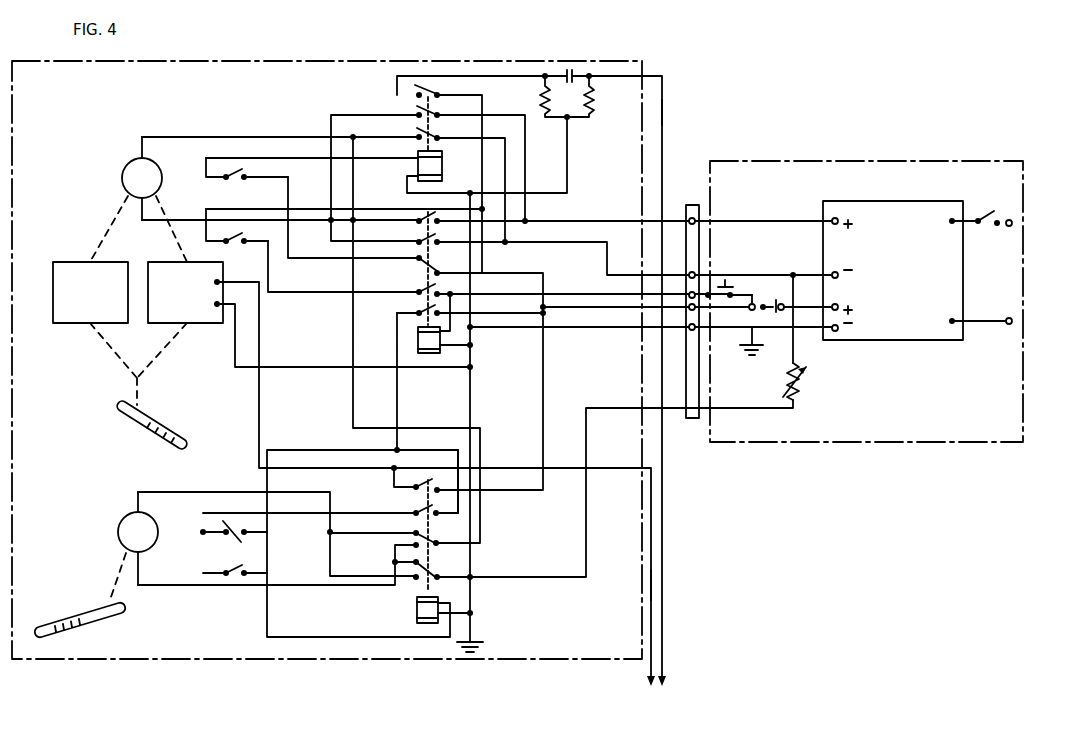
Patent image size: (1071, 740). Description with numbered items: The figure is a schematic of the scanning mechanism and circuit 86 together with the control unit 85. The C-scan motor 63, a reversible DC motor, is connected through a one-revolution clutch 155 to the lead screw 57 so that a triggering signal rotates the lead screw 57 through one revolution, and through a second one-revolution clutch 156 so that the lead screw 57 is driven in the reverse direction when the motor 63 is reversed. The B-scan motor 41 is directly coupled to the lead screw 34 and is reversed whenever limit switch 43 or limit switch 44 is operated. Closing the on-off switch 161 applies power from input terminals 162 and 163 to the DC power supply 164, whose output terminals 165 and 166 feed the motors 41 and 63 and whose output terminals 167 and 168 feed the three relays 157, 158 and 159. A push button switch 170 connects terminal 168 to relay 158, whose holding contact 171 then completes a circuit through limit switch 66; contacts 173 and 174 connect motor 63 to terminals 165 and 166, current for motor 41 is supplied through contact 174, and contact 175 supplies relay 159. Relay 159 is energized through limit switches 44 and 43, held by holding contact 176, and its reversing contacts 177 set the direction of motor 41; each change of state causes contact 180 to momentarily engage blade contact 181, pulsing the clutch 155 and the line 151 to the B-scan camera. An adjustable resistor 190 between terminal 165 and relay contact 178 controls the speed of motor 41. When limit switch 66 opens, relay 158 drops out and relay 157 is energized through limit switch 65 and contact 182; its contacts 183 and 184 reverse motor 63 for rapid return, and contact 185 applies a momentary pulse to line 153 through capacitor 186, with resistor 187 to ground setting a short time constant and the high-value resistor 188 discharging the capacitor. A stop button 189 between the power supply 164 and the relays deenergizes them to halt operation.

The lead screw 34 is at (90, 620).
The B-scan motor 41 is at (130, 523).
The limit switch 43 is at (230, 576).
The limit switch 44 is at (235, 540).
The lead screw 57 is at (143, 421).
The C-scan motor 63 is at (126, 175).
The limit switch 65 is at (243, 179).
The limit switch 66 is at (245, 239).
The control unit 85 is at (1024, 163).
The scanning mechanism and circuit 86 is at (645, 62).
The line 151 is at (651, 585).
The line 153 is at (663, 112).
The one-revolution clutch 155 is at (213, 272).
The one-revolution clutch 156 is at (82, 267).
The relay 157 is at (418, 170).
The relay 158 is at (418, 340).
The relay 159 is at (417, 613).
The on-off switch 161 is at (981, 218).
The power input terminal 162 is at (1008, 228).
The power input terminal 163 is at (1005, 318).
The DC power supply 164 is at (886, 207).
The output terminal 165 is at (832, 273).
The output terminal 166 is at (832, 220).
The output terminal 167 is at (836, 331).
The output terminal 168 is at (832, 305).
The push button switch 170 is at (728, 282).
The holding contact 171 is at (419, 288).
The contact 173 is at (419, 238).
The contact 174 is at (419, 214).
The contact 175 is at (419, 310).
The holding contact 176 is at (412, 511).
The reversing contacts 177 is at (431, 548).
The relay contact 178 is at (432, 580).
The contact 180 is at (421, 481).
The blade contact 181 is at (412, 486).
The contact 182 is at (419, 258).
The contact 183 is at (442, 129).
The contact 184 is at (438, 141).
The contact 185 is at (427, 77).
The capacitor 186 is at (575, 71).
The resistor 187 is at (592, 97).
The resistor 188 is at (541, 96).
The stop button 189 is at (776, 300).
The adjustable resistor 190 is at (800, 388).